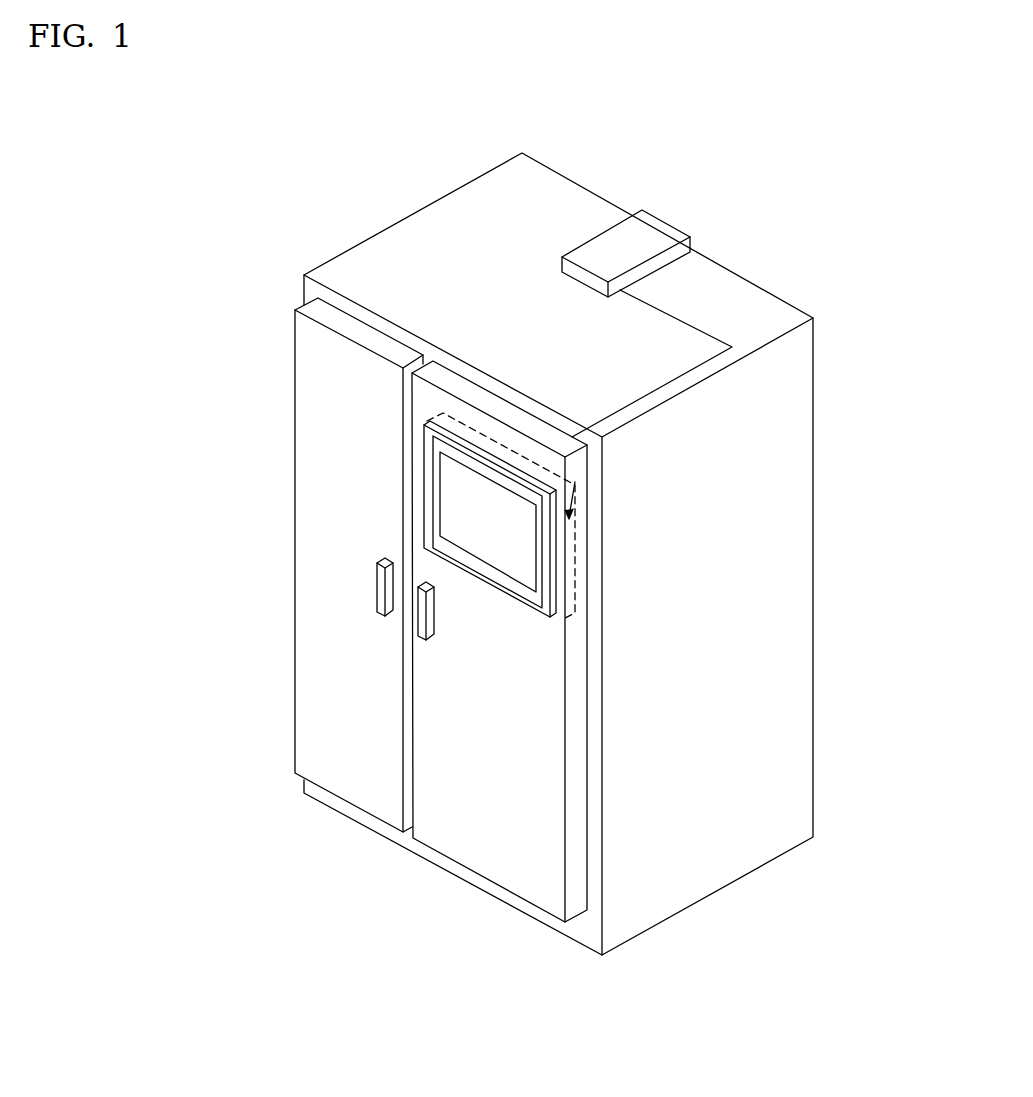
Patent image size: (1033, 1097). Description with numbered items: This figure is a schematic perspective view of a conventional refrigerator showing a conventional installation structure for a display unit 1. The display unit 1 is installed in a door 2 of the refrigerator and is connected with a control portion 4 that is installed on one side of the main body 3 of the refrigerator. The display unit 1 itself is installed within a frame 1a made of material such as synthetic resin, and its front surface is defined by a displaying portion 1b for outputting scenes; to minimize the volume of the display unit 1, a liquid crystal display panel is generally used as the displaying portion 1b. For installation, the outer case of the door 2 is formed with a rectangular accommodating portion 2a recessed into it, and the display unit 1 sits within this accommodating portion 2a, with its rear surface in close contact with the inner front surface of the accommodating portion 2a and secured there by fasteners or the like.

The display unit 1 is at (402, 550).
The frame 1a is at (431, 538).
The displaying portion 1b is at (440, 497).
The door 2 is at (467, 852).
The accommodating portion 2a is at (419, 482).
The main body 3 is at (803, 527).
The control portion 4 is at (652, 228).